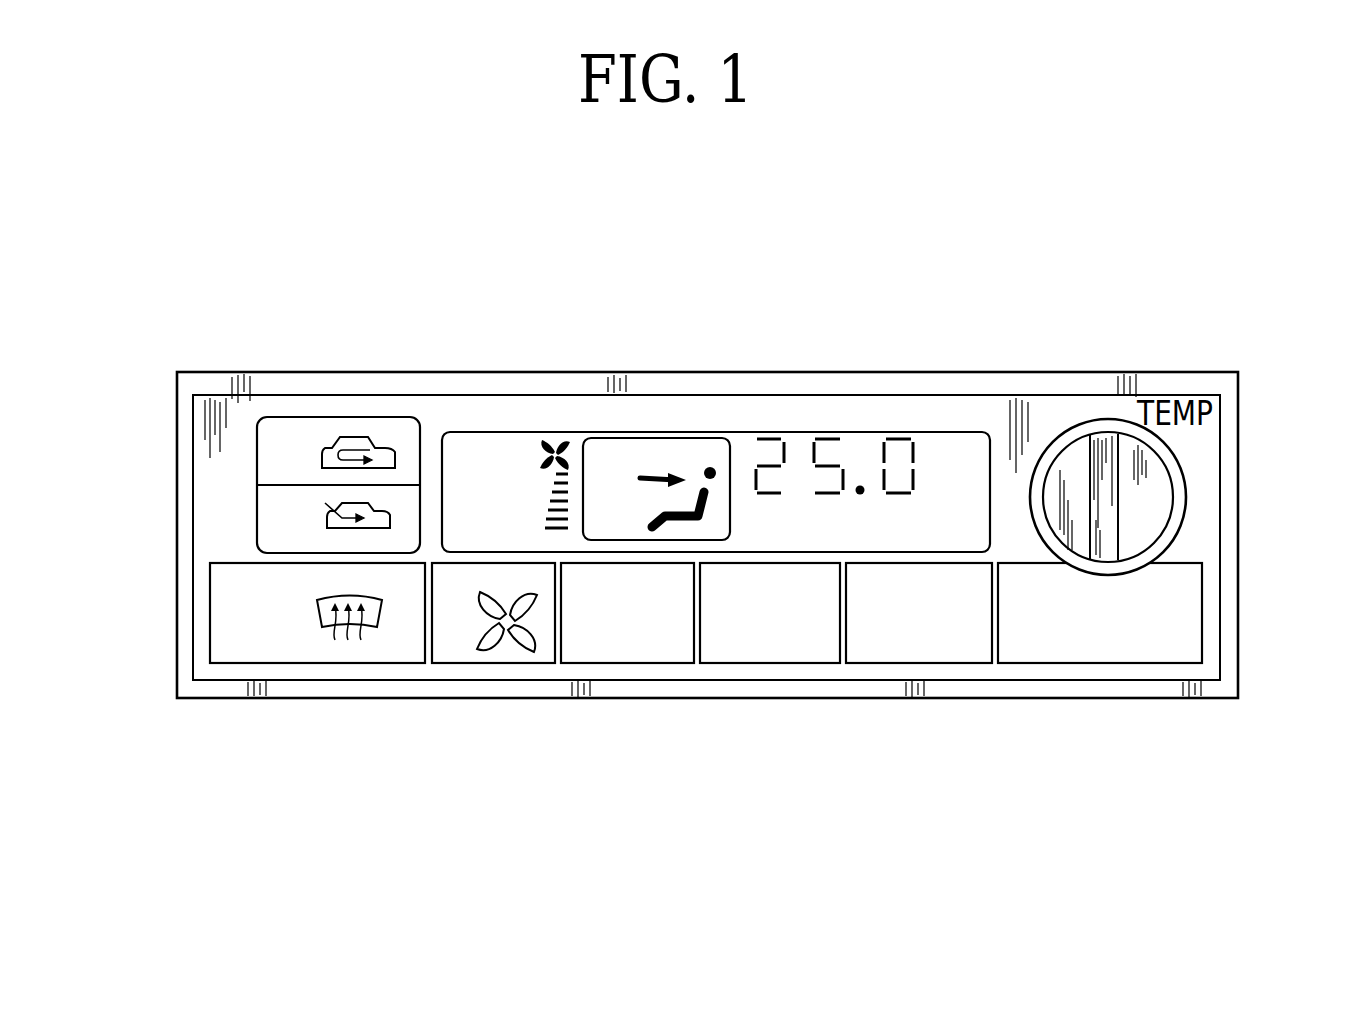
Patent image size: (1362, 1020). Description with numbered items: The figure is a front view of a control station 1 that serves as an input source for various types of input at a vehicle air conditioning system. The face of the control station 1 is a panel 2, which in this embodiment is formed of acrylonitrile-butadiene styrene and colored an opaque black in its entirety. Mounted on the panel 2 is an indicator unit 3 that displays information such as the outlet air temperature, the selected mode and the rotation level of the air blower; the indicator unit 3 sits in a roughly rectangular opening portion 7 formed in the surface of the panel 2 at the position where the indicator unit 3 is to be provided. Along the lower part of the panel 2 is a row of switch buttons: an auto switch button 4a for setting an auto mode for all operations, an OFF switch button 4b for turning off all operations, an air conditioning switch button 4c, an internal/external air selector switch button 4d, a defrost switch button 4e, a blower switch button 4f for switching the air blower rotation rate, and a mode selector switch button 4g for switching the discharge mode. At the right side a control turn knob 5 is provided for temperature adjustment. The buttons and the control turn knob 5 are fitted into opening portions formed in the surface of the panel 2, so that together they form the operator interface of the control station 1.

The control station 1 is at (1062, 363).
The panel 2 is at (428, 386).
The indicator unit 3 is at (940, 447).
The auto switch button 4a is at (1157, 652).
The OFF switch button 4b is at (960, 650).
The air conditioning switch button 4c is at (727, 652).
The internal/external air selector switch button 4d is at (268, 452).
The defrost switch button 4e is at (318, 650).
The blower switch button 4f is at (512, 652).
The mode selector switch button 4g is at (630, 655).
The control turn knob 5 is at (1153, 495).
The opening portion 7 is at (716, 405).